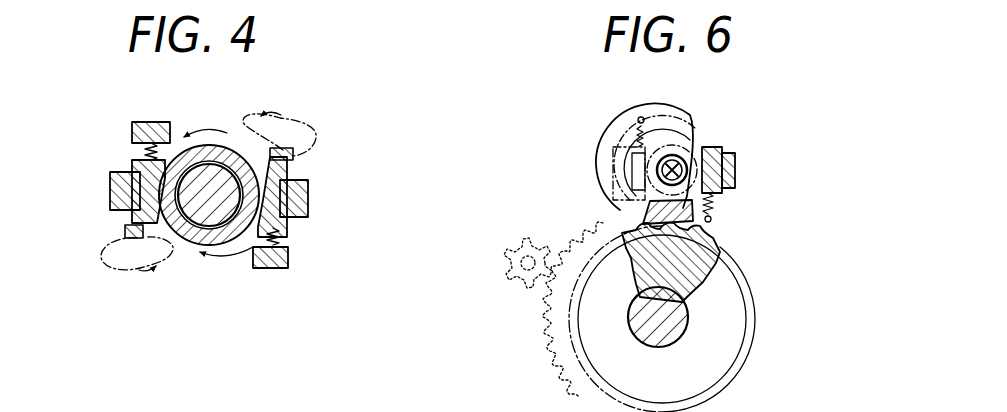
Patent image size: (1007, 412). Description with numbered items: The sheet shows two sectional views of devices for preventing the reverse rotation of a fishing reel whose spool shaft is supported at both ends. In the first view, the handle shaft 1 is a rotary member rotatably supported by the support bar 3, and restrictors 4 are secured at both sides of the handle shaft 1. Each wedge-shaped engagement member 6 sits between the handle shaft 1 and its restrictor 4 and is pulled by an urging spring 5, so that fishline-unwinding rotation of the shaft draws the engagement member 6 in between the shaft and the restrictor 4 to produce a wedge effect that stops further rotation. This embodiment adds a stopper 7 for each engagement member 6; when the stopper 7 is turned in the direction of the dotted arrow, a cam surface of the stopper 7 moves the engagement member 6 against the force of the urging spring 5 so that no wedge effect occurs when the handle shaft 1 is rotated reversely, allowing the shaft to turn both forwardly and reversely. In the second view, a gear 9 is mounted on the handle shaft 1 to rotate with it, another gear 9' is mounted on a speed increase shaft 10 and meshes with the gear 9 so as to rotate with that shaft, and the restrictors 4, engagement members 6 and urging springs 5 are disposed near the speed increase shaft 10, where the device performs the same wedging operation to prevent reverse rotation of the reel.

In FIG. 4, the handle shaft 1 is at (229, 146).
In FIG. 4, the support bar 3 is at (200, 228).
In FIG. 6, the support bar 3 is at (682, 319).
In FIG. 4, the restrictor 4 is at (113, 181).
In FIG. 6, the restrictor 4 is at (737, 170).
In FIG. 4, the urging spring 5 is at (140, 145).
In FIG. 4, the wedge-shaped engagement member 6 is at (128, 198).
In FIG. 6, the wedge-shaped engagement member 6 is at (721, 148).
In FIG. 4, the stopper 7 is at (128, 229).
In FIG. 6, the gear 9 is at (709, 255).
In FIG. 6, the gear 9' is at (616, 198).
In FIG. 6, the speed increase shaft 10 is at (692, 153).